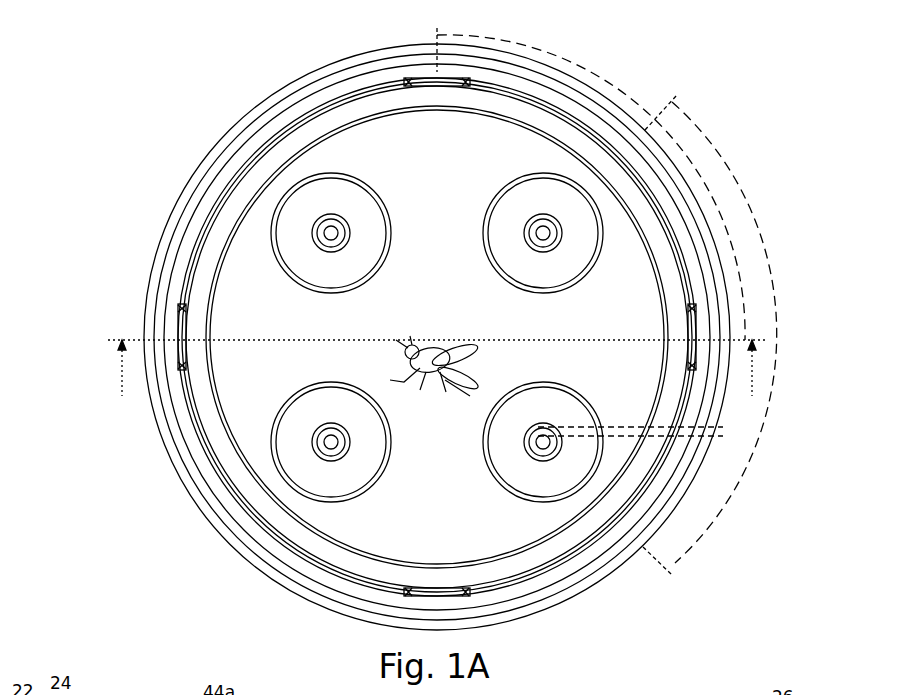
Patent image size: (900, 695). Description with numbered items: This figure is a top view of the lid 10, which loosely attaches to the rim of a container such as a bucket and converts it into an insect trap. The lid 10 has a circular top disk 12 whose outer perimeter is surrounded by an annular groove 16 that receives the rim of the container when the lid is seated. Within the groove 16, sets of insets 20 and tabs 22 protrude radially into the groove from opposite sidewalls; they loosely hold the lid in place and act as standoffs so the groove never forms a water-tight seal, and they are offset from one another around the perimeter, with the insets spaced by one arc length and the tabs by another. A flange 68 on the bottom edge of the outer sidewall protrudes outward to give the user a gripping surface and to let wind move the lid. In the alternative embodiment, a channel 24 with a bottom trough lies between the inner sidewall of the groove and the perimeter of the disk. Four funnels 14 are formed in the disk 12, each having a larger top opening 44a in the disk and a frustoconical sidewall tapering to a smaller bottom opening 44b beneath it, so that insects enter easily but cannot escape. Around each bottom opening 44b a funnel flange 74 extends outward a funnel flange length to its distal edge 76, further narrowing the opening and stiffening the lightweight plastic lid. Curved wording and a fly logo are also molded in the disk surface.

The lid 10 is at (736, 56).
The top disk 12 is at (263, 237).
The funnel 14 is at (530, 228).
The annular groove 16 is at (222, 500).
The insets 20 is at (237, 132).
The tabs 22 is at (172, 318).
The channel 24 is at (218, 438).
The top opening 44a is at (535, 500).
The bottom opening 44b is at (542, 458).
The flange 68 is at (262, 568).
The funnel flange 74 is at (330, 197).
The distal edge 76 is at (548, 445).